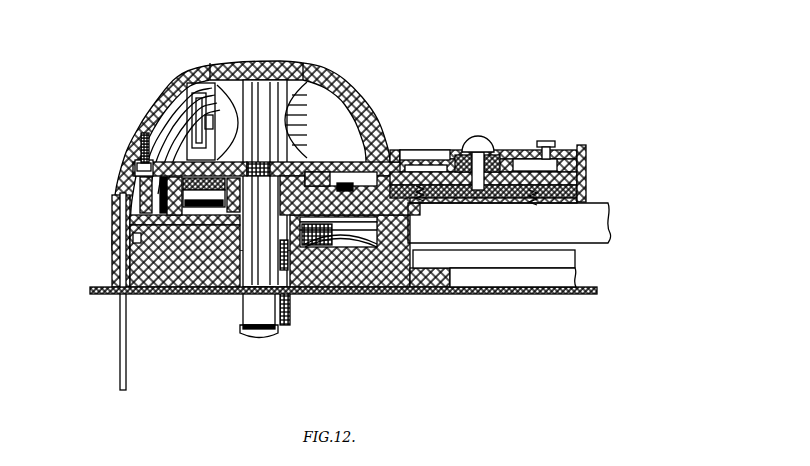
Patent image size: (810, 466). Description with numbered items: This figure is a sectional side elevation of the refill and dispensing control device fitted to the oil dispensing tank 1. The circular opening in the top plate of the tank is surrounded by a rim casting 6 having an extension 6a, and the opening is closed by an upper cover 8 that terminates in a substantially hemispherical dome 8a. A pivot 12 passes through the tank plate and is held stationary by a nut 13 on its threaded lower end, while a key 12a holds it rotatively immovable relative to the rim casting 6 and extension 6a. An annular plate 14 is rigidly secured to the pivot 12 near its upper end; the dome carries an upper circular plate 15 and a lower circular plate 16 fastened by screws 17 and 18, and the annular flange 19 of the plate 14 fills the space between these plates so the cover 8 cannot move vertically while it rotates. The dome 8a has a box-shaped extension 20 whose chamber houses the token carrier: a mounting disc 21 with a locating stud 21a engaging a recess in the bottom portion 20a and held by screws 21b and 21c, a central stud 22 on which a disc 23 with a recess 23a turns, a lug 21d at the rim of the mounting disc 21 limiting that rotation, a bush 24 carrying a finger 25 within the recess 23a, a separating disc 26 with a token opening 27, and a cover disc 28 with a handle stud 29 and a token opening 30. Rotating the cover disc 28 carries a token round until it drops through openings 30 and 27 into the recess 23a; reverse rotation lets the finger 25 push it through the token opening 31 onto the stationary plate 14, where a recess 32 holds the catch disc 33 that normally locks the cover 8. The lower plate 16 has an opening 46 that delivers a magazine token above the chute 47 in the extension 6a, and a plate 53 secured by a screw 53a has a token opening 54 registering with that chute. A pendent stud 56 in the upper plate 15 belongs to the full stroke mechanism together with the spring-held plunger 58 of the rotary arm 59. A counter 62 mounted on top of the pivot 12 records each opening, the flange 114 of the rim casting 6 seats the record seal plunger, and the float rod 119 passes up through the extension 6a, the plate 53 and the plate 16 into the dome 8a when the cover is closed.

The oil dispensing tank 1 is at (343, 282).
The rim casting 6 is at (566, 278).
The extension of the rim casting 6a is at (417, 292).
The upper cover 8 is at (612, 224).
The hemispherical dome 8a is at (180, 100).
The pivot 12 is at (253, 335).
The key 12a is at (280, 262).
The nut 13 is at (233, 318).
The annular plate 14 is at (350, 217).
The upper circular plate 15 is at (225, 160).
The lower circular plate 16 is at (112, 215).
The screw 17 is at (389, 250).
The screw 18 is at (142, 152).
The annular flange 19 is at (237, 198).
The box-shaped extension 20 is at (586, 177).
The bottom portion of the box-shaped member 20a is at (505, 204).
The mounting disc 21 is at (492, 200).
The locating stud 21a is at (560, 206).
The screw 21b is at (537, 207).
The screw 21c is at (422, 198).
The lug 21d is at (586, 158).
The stud 22 is at (478, 152).
The disc 23 is at (586, 190).
The recess 23a is at (409, 170).
The bush 24 is at (485, 142).
The finger 25 is at (458, 204).
The separating disc 26 is at (427, 160).
The token opening 27 is at (557, 145).
The cover disc 28 is at (528, 150).
The handle stud 29 is at (550, 141).
The token opening 30 is at (407, 153).
The token opening 31 is at (390, 150).
The recess 32 is at (315, 172).
The circular disc 33 is at (320, 180).
The opening 46 is at (345, 222).
The chute 47 is at (350, 240).
The plate 53 is at (210, 222).
The screw 53a is at (130, 240).
The token opening 54 is at (333, 240).
The pendent stud 56 is at (162, 190).
The spring-held plunger 58 is at (192, 215).
The rotary arm 59 is at (226, 193).
The counter 62 is at (235, 95).
The flange 114 is at (452, 275).
The rod 119 is at (143, 291).